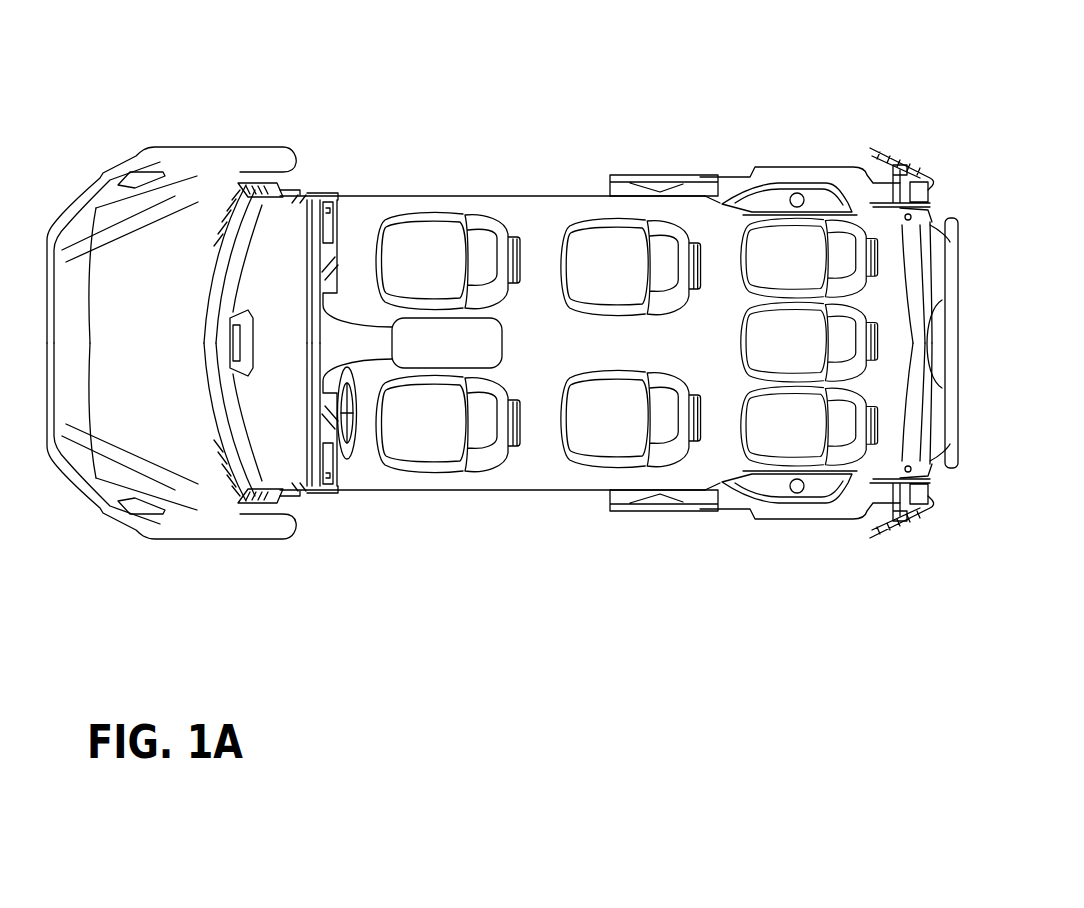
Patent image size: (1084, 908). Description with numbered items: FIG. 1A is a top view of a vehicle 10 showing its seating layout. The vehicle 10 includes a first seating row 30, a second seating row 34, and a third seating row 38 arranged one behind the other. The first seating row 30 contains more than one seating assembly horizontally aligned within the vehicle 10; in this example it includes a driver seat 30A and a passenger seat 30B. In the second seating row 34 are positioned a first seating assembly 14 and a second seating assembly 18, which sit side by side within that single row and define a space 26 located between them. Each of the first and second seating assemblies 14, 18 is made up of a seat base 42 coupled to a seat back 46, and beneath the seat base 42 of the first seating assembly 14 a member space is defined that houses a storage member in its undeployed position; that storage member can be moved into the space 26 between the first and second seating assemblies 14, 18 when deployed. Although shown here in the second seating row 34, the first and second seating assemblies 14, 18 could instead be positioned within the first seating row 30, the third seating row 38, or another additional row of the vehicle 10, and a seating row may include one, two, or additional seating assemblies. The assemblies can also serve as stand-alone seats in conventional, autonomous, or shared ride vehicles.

The vehicle 10 is at (775, 103).
The first seating assembly 14 is at (605, 430).
The second seating assembly 18 is at (614, 206).
The space 26 is at (642, 337).
The first seating row 30 is at (433, 369).
The driver seat 30A is at (415, 440).
The passenger seat 30B is at (425, 233).
The second seating row 34 is at (657, 520).
The third seating row 38 is at (805, 530).
The seat base 42 is at (563, 233).
The seat back 46 is at (670, 253).